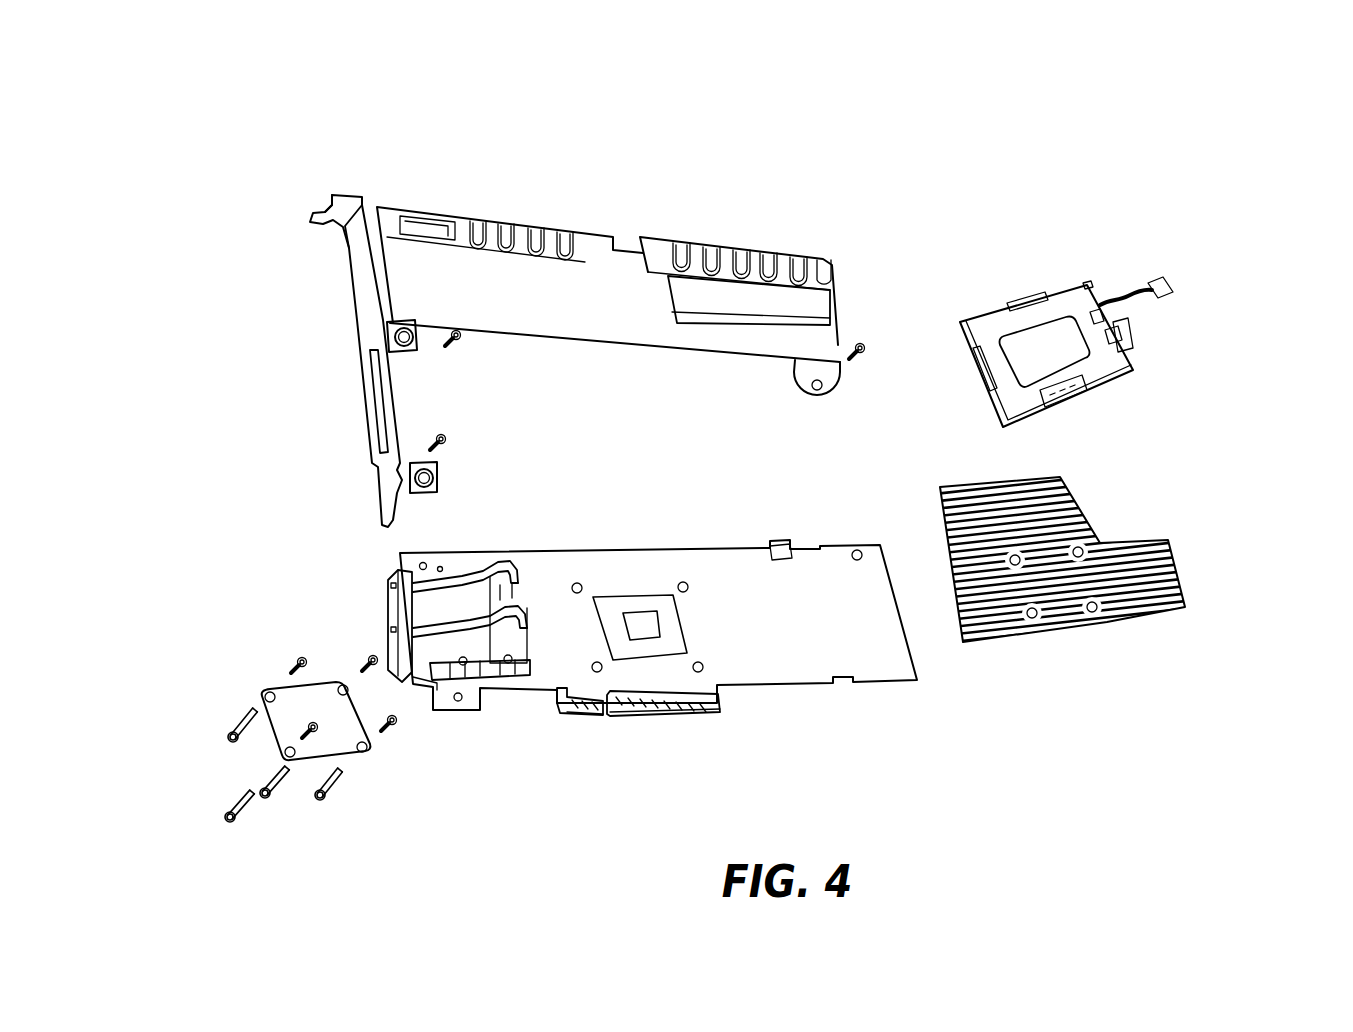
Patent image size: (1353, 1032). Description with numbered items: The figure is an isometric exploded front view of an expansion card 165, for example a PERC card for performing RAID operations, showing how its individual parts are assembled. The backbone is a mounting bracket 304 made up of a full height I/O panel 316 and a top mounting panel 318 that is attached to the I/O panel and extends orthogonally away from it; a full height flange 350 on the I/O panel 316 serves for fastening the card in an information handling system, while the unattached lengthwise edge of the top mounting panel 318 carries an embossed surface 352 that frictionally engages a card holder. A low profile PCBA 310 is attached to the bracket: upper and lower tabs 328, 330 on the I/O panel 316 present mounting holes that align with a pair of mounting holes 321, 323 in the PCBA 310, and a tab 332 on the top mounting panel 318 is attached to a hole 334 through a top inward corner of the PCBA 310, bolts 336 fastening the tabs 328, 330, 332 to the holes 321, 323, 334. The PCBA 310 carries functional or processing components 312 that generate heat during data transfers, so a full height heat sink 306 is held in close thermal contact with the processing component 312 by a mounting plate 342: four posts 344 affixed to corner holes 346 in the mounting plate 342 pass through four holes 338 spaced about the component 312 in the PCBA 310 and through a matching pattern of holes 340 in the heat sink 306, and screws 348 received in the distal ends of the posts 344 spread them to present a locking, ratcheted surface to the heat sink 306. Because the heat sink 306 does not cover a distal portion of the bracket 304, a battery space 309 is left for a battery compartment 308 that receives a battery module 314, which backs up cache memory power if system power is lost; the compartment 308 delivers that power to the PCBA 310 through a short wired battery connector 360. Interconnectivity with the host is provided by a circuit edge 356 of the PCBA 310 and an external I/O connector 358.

The expansion card 165 is at (723, 436).
The mounting bracket 304 is at (668, 309).
The full height heat sink 306 is at (1132, 570).
The battery compartment 308 is at (1086, 308).
The battery space 309 is at (781, 272).
The low profile PCBA 310 is at (699, 628).
The functional or processing components 312 is at (728, 655).
The battery module 314 is at (1106, 361).
The full height I/O panel 316 is at (398, 324).
The top mounting panel 318 is at (608, 277).
The mounting hole 321 is at (471, 585).
The mounting hole 323 is at (409, 750).
The upper tab 328 is at (481, 360).
The lower tab 330 is at (515, 449).
The tab 332 is at (751, 408).
The hole 334 is at (795, 529).
The bolts 336 is at (904, 385).
The holes 338 is at (544, 521).
The holes 340 is at (1138, 650).
The mounting plate 342 is at (241, 654).
The posts 344 is at (235, 765).
The corner holes 346 is at (193, 662).
The screws 348 is at (266, 661).
The full height flange 350 is at (269, 185).
The embossed surface 352 is at (553, 211).
The circuit edge 356 is at (659, 723).
The external I/O connector 358 is at (526, 711).
The wired battery connector 360 is at (1207, 252).